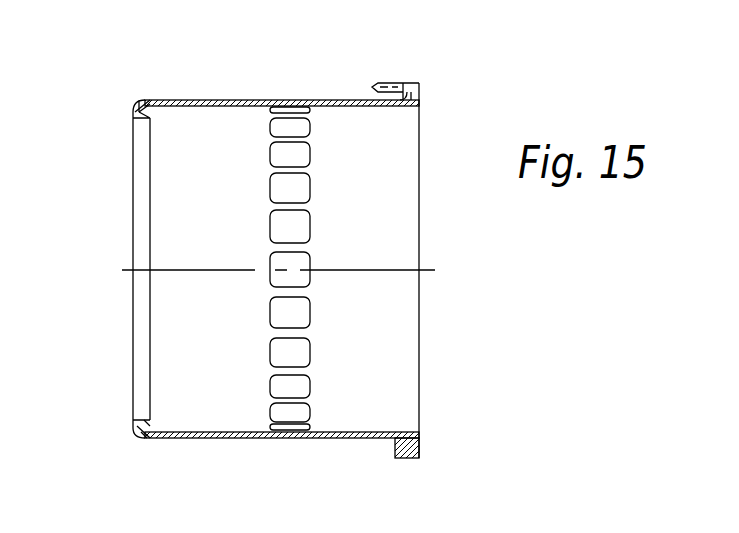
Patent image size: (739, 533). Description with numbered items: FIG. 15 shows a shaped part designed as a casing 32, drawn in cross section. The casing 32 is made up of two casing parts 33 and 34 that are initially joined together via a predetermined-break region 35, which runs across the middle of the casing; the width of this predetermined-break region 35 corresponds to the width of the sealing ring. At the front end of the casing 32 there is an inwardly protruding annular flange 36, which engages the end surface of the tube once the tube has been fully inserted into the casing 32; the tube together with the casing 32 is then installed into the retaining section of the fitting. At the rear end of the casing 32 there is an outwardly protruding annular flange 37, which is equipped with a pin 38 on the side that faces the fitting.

The casing 32 is at (197, 82).
The casing part 33 is at (355, 100).
The casing part 34 is at (165, 100).
The predetermined-break region 35 is at (292, 128).
The inwardly protruding annular flange 36 is at (133, 430).
The outwardly protruding annular flange 37 is at (413, 445).
The pin 38 is at (385, 83).